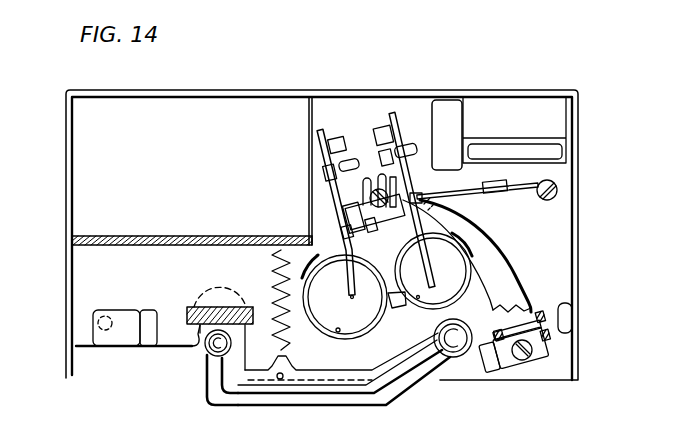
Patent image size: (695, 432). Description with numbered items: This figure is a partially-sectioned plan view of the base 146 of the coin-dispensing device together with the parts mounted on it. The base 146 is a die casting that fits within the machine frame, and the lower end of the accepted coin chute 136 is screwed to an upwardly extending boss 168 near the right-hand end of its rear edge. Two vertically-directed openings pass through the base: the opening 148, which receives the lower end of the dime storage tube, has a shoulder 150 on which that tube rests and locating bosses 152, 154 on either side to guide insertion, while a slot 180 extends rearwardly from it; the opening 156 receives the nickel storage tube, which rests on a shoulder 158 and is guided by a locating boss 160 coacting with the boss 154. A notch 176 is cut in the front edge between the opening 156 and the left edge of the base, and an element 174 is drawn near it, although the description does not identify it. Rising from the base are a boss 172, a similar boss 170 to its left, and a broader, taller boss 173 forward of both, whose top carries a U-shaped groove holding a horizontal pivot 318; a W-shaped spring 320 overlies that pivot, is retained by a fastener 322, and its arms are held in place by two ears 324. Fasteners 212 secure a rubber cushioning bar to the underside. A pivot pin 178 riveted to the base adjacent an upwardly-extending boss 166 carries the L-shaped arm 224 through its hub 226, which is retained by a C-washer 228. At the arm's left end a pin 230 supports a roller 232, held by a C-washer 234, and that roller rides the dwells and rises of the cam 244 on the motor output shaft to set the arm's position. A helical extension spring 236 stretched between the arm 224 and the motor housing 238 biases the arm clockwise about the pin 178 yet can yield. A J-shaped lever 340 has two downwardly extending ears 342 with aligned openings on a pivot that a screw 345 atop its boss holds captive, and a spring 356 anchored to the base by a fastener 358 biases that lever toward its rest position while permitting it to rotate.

The accepted coin chute 136 is at (558, 120).
The base 146 is at (85, 260).
The vertically-directed opening 148 is at (419, 298).
The shoulder 150 is at (458, 295).
The locating boss 152 is at (462, 242).
The second locating boss 154 is at (392, 307).
The vertically-directed opening 156 is at (339, 332).
The shoulder 158 is at (357, 337).
The locating boss 160 is at (315, 259).
The upwardly-extending boss 166 is at (483, 340).
The upwardly extending boss 168 is at (452, 107).
The boss 170 is at (340, 133).
The boss 172 is at (384, 115).
The boss 173 is at (392, 233).
The platform 174 is at (150, 338).
The notch 176 is at (195, 347).
The pivot 178 is at (455, 345).
The slot 180 is at (430, 200).
The fasteners 212 is at (529, 424).
The arm 224 is at (344, 403).
The hub 226 is at (465, 357).
The C-washer 228 is at (443, 353).
The pin 230 is at (214, 352).
The roller 232 is at (222, 368).
The C-washer 234 is at (231, 390).
The helical extension spring 236 is at (285, 354).
The motor housing 238 is at (85, 202).
The cam 244 is at (205, 312).
The pivot 318 is at (412, 218).
The W-shaped spring 320 is at (357, 210).
The fastener 322 is at (380, 181).
The ears 324 is at (362, 233).
The J-shaped lever 340 is at (517, 283).
The ears 342 is at (552, 354).
The screw 345 is at (517, 361).
The spring 356 is at (517, 192).
The fastener 358 is at (560, 191).